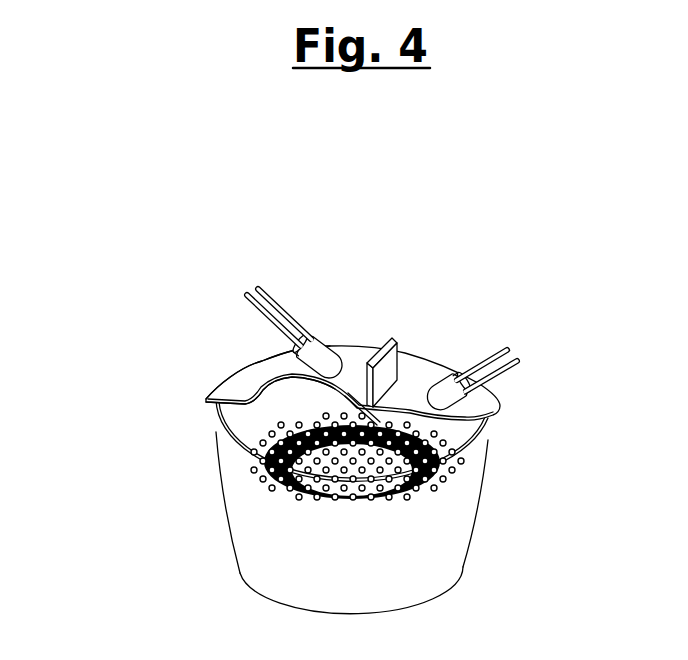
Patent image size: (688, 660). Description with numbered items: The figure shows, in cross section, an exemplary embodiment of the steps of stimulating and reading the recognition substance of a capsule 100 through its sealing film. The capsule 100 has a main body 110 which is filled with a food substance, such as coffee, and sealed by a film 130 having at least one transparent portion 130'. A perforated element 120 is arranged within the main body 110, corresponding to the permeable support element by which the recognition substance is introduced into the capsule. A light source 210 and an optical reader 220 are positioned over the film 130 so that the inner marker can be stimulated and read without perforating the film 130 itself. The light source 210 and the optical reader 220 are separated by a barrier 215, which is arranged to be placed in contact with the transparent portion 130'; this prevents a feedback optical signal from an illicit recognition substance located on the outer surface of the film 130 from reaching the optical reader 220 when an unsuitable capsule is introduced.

The capsule 100 is at (161, 286).
The main body 110 is at (310, 538).
The perforated tray 120 is at (240, 452).
The film 130 is at (322, 385).
The transparent portion 130' is at (185, 375).
The light source 210 is at (488, 321).
The barrier 215 is at (402, 346).
The optical reader 220 is at (288, 289).